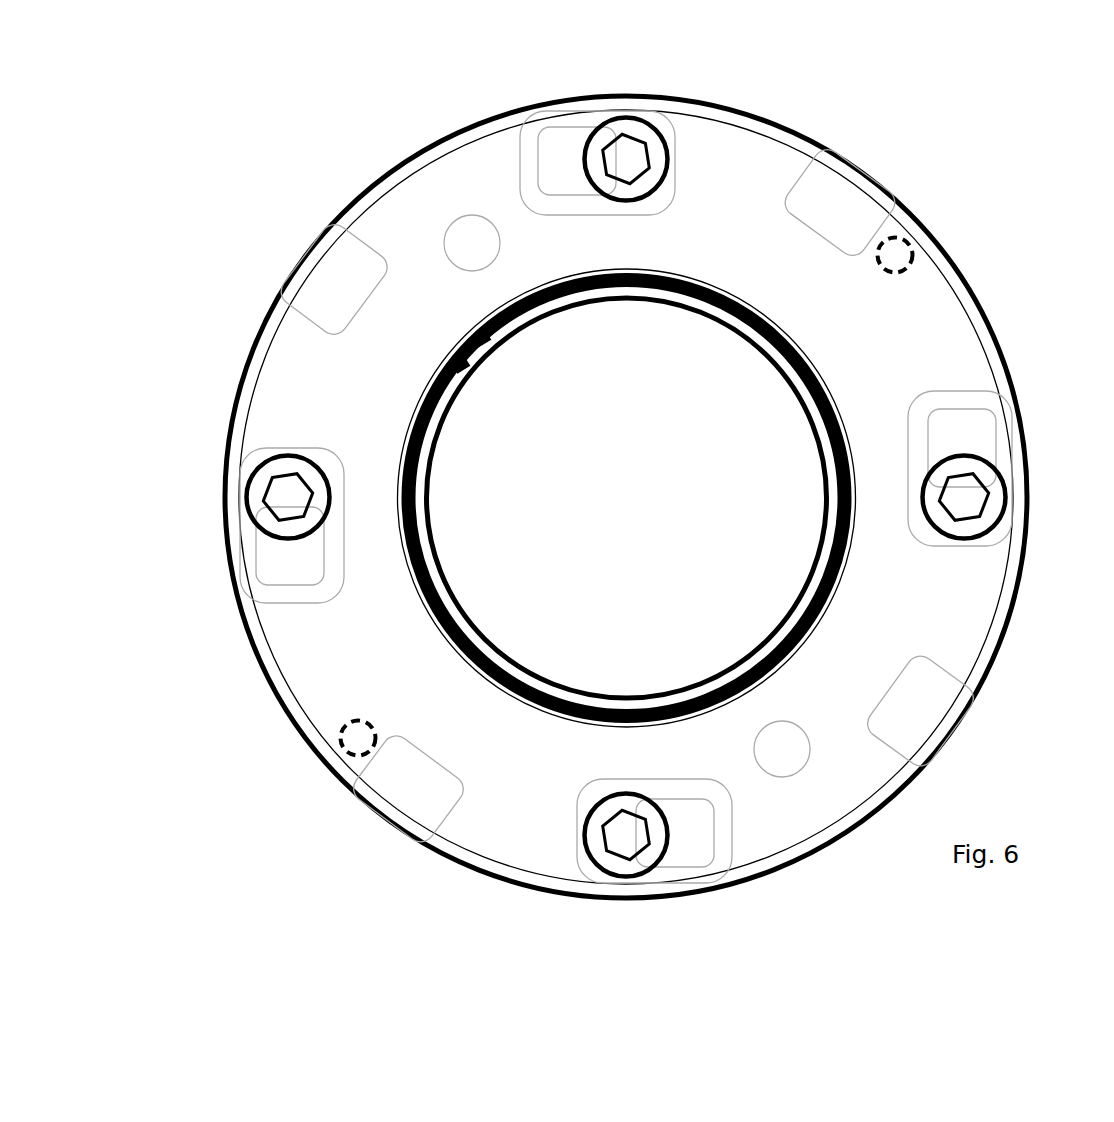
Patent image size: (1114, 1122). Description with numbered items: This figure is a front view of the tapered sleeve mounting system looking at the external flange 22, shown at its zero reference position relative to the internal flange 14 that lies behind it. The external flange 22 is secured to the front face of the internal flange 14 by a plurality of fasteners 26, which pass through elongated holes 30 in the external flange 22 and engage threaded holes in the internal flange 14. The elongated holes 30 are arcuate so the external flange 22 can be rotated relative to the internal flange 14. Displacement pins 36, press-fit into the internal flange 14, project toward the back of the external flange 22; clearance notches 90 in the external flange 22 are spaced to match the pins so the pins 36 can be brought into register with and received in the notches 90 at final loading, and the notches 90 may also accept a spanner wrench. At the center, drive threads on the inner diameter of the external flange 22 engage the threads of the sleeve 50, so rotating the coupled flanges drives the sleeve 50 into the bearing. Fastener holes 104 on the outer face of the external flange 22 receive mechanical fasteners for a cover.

The internal flange 14 is at (928, 720).
The external flange 22 is at (962, 318).
The fasteners 26 is at (636, 150).
The elongated holes 30 is at (533, 167).
The displacement pin 36 is at (913, 255).
The sleeve 50 is at (658, 300).
The clearance notches 90 is at (888, 222).
The fastener holes 104 is at (473, 258).